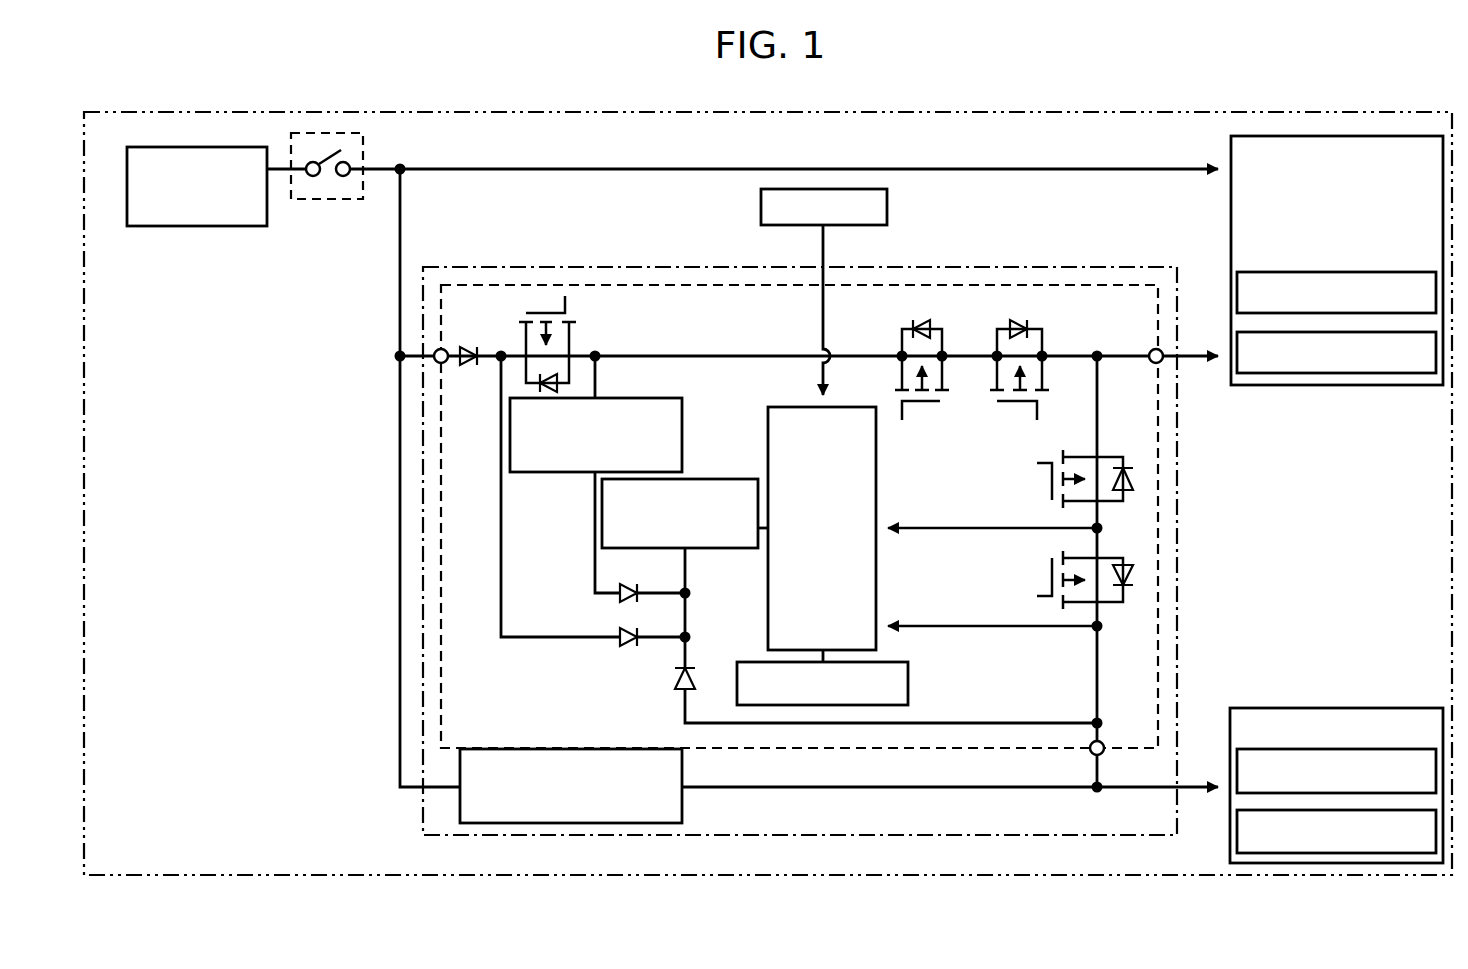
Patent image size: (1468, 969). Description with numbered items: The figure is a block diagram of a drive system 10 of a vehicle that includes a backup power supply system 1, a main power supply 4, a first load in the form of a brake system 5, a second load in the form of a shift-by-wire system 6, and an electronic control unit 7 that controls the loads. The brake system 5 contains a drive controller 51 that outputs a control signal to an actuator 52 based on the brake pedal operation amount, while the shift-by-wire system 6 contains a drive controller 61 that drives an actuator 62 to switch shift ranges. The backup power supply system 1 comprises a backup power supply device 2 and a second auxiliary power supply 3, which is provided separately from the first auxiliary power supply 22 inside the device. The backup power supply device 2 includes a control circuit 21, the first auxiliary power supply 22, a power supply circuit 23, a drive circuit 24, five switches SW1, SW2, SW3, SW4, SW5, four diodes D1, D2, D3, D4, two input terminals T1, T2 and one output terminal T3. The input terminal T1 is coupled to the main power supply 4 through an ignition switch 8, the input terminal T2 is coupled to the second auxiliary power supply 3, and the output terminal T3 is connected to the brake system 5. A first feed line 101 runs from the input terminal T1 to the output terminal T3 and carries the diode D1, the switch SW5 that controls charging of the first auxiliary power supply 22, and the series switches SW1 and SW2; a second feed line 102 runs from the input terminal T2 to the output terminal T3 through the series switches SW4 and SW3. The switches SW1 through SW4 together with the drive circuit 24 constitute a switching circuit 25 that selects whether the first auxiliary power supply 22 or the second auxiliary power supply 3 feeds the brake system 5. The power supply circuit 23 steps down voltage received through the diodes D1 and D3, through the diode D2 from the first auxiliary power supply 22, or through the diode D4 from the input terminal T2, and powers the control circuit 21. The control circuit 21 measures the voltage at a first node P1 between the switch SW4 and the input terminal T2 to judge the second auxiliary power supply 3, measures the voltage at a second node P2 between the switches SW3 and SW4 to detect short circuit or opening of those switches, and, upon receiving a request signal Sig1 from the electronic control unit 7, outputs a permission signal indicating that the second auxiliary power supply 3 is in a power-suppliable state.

The drive system 10 is at (1152, 110).
The backup power supply system 1 is at (1069, 262).
The backup power supply device 2 is at (656, 283).
The second auxiliary power supply 3 is at (683, 796).
The main power supply 4 is at (222, 228).
The brake system 5 is at (1311, 292).
The shift-by-wire system 6 is at (1311, 754).
The electronic control unit 7 is at (760, 211).
The ignition switch 8 is at (328, 201).
The control circuit 21 is at (762, 418).
The first auxiliary power supply 22 is at (560, 474).
The power supply circuit 23 is at (721, 478).
The drive circuit 24 is at (910, 684).
The switching circuit 25 is at (1004, 452).
The drive controller 51 is at (1328, 374).
The actuator 52 is at (1340, 272).
The drive controller 61 is at (1237, 839).
The actuator 62 is at (1237, 762).
The first feed line 101 is at (724, 354).
The second feed line 102 is at (1099, 392).
The input terminal T1 is at (446, 349).
The input terminal T2 is at (1106, 752).
The output terminal T3 is at (1149, 350).
The diode D1 is at (468, 372).
The diode D2 is at (655, 581).
The diode D3 is at (596, 516).
The diode D4 is at (886, 635).
The switch SW1 is at (922, 357).
The switch SW2 is at (1020, 357).
The switch SW3 is at (1042, 479).
The switch SW4 is at (1042, 580).
The switch SW5 is at (572, 344).
The first node P1 is at (1103, 629).
The second node P2 is at (1103, 531).
The request signal Sig1 is at (852, 310).